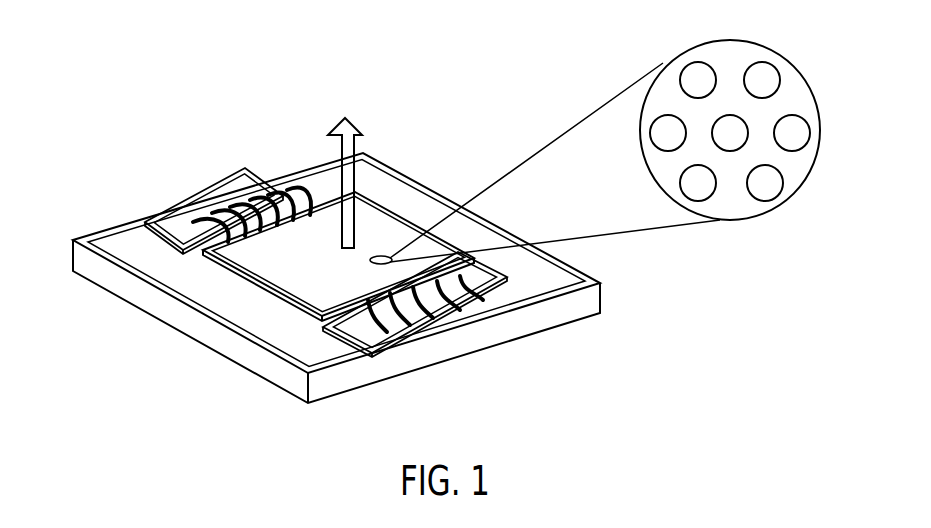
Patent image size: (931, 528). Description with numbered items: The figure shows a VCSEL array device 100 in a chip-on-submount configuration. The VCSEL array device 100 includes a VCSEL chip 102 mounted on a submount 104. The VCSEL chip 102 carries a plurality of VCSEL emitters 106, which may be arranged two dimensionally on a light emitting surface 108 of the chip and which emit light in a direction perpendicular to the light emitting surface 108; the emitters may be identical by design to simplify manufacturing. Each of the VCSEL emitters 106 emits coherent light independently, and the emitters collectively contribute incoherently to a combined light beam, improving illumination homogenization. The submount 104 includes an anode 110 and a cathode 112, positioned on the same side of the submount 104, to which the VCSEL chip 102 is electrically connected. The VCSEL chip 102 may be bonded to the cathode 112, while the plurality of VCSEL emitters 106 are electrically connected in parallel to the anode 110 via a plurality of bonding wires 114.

The VCSEL array device 100 is at (138, 70).
The VCSEL chip 102 is at (272, 279).
The submount 104 is at (272, 383).
The VCSEL emitters 106 is at (660, 56).
The light emitting surface 108 is at (355, 268).
The anode 110 is at (175, 225).
The cathode 112 is at (128, 247).
The bonding wires 114 is at (256, 172).